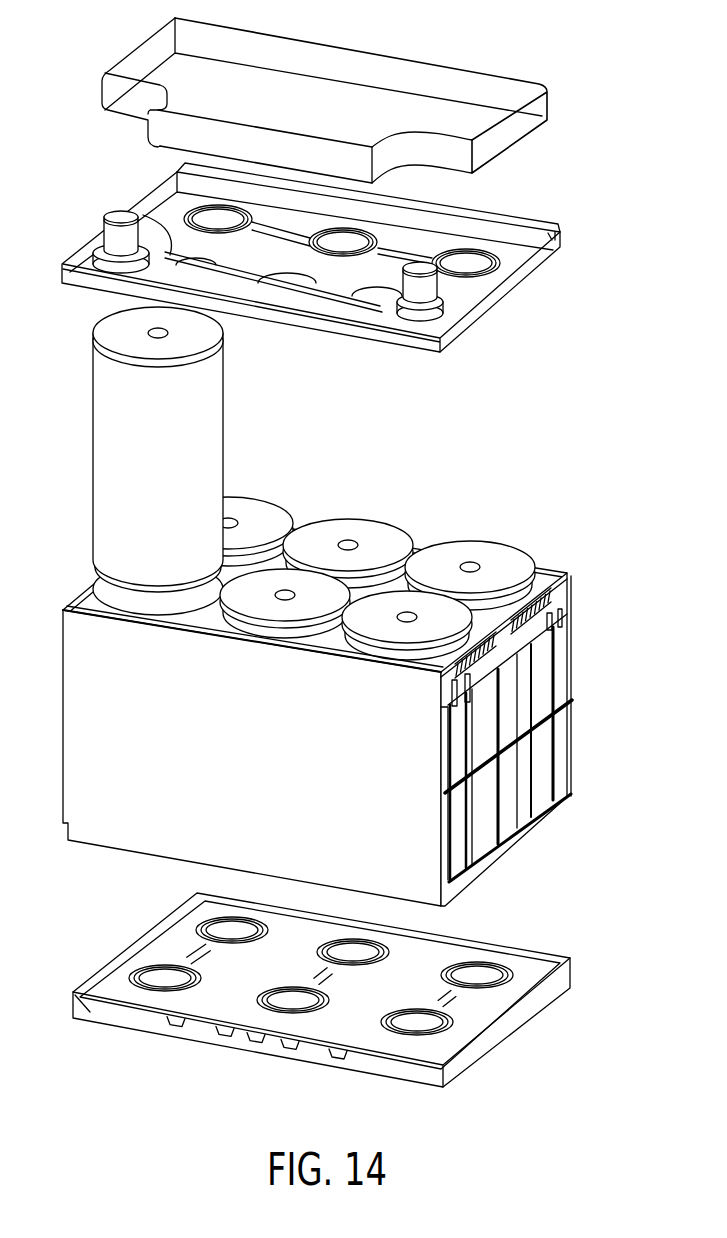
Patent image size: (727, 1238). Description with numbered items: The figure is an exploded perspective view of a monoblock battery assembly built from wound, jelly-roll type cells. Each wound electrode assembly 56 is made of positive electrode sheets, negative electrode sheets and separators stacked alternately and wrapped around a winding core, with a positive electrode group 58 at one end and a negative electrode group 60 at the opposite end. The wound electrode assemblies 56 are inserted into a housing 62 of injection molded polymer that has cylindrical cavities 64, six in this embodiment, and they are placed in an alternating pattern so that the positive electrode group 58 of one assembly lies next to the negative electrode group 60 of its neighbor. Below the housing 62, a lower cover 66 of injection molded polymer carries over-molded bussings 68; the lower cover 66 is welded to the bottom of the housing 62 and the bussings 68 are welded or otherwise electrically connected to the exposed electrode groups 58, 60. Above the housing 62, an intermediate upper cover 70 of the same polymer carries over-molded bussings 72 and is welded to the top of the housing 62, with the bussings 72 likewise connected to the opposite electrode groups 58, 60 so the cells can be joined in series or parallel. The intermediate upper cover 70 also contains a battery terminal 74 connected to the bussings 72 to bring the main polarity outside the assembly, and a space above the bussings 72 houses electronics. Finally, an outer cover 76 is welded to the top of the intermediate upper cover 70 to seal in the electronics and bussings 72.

The wound electrode assembly 56 is at (98, 423).
The positive electrode group 58 is at (343, 520).
The negative electrode group 60 is at (253, 497).
The housing 62 is at (572, 733).
The cylindrical cavity 64 is at (120, 605).
The lower cover 66 is at (567, 987).
The over-molded bussing 68 is at (132, 980).
The intermediate upper cover 70 is at (543, 246).
The over-molded bussing 72 is at (465, 262).
The battery terminal 74 is at (432, 292).
The outer cover 76 is at (541, 124).